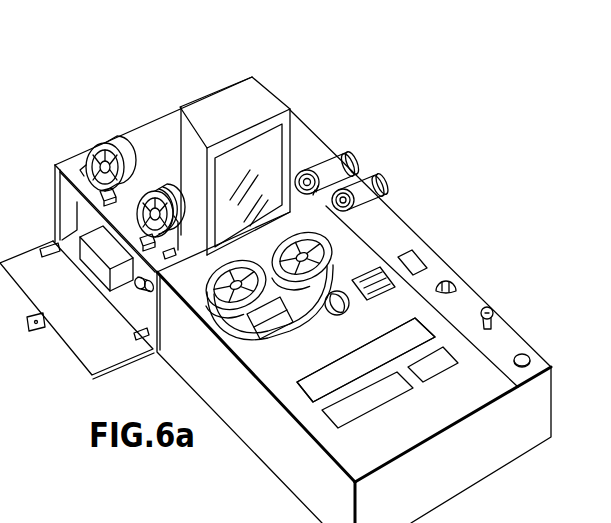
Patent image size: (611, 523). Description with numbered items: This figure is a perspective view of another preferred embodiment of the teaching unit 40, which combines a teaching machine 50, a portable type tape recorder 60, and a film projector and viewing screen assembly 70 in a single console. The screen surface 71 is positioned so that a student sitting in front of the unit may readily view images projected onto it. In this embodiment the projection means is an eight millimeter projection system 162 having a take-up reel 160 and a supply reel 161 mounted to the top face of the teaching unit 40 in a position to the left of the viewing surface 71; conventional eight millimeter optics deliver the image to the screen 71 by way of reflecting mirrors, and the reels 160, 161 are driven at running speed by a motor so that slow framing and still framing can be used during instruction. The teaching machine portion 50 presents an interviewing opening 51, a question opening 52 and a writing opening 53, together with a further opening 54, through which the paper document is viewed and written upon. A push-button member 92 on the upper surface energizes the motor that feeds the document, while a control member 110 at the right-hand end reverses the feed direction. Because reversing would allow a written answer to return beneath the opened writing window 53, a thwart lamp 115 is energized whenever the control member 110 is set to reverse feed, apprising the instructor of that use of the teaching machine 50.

The teaching unit 40 is at (523, 322).
The teaching machine 50 is at (270, 378).
The interviewing opening 51 is at (372, 400).
The question opening 52 is at (336, 350).
The writing opening 53 is at (437, 365).
The display window 54 is at (403, 318).
The portable type tape recorder 60 is at (355, 252).
The film projector and viewing screen assembly 70 is at (309, 72).
The viewing screen surface 71 is at (272, 159).
The push-button member 92 is at (529, 358).
The control member 110 is at (492, 312).
The thwart lamp 115 is at (452, 278).
The take-up reel 160 is at (181, 177).
The supply reel 161 is at (104, 140).
The 8 mm. projection system 162 is at (100, 258).